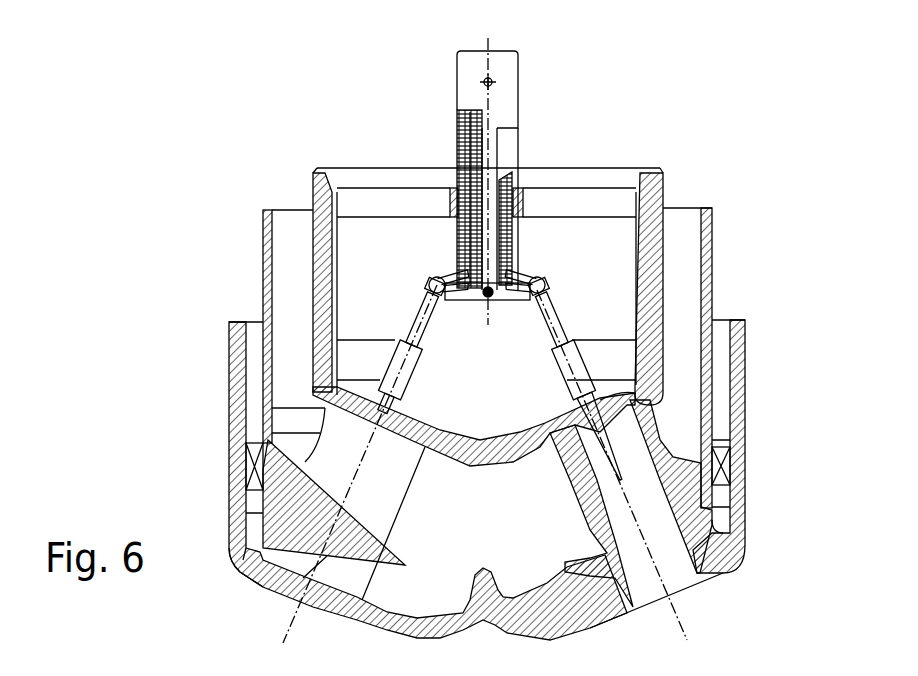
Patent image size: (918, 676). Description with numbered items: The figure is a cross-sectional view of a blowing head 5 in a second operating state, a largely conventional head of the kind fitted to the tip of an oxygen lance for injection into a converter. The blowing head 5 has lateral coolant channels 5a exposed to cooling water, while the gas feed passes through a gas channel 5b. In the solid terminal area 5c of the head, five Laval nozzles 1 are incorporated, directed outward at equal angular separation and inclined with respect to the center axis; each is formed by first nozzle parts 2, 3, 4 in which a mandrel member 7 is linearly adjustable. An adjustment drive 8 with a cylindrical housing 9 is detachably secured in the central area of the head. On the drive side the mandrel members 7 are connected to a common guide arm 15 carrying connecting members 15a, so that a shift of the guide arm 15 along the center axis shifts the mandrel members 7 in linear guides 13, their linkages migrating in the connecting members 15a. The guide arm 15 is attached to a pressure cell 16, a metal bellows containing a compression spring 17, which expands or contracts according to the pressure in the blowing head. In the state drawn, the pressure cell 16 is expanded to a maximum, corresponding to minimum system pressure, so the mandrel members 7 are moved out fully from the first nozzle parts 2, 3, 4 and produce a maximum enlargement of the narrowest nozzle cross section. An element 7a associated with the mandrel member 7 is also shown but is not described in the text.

The Laval nozzle 1 is at (488, 342).
The first nozzle part 2 is at (630, 433).
The first nozzle part 3 is at (650, 553).
The first nozzle part 4 is at (735, 453).
The blowing head 5 is at (459, 364).
The lateral coolant channels 5a is at (253, 338).
The gas channel 5b is at (617, 227).
The solid terminal area 5c is at (232, 565).
The mandrel member 7 is at (564, 374).
The rod bushing 7a is at (648, 404).
The adjustment drive 8 is at (461, 260).
The cylindrical housing 9 is at (328, 235).
The linear guides 13 is at (567, 380).
The guide arm 15 is at (470, 300).
The connecting members 15a is at (413, 275).
The pressure cell 16 is at (457, 172).
The compression spring 17 is at (457, 108).